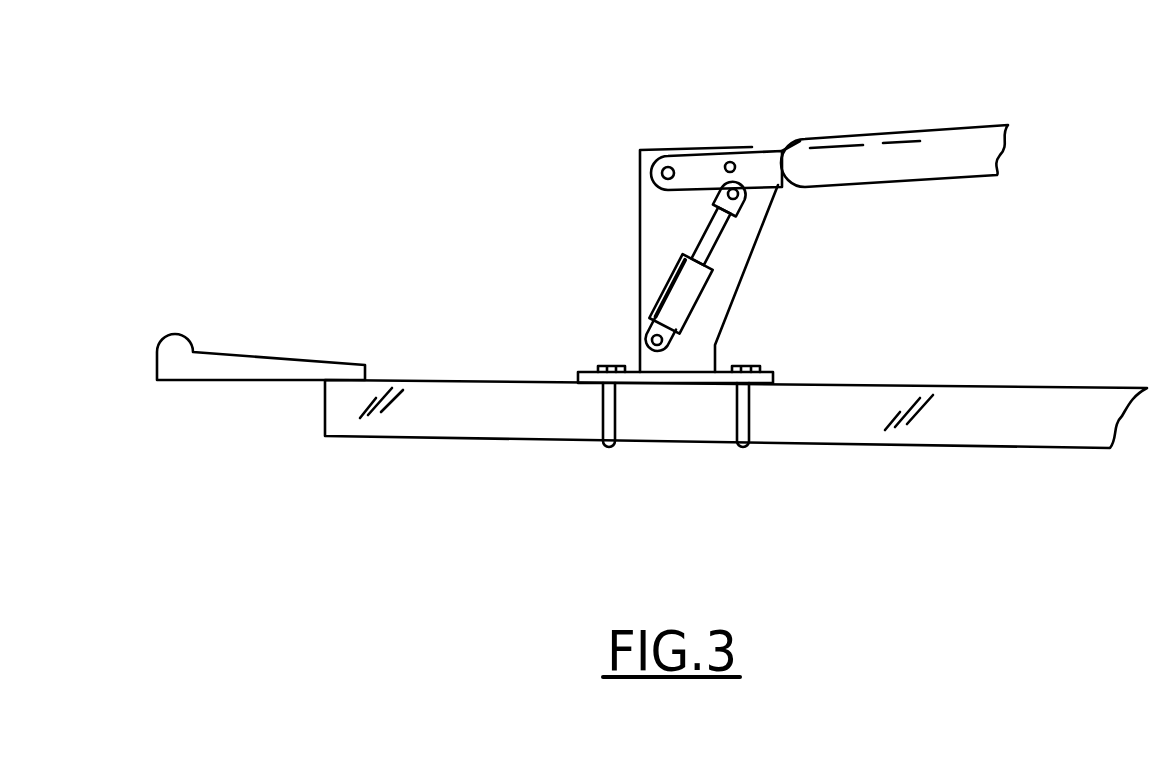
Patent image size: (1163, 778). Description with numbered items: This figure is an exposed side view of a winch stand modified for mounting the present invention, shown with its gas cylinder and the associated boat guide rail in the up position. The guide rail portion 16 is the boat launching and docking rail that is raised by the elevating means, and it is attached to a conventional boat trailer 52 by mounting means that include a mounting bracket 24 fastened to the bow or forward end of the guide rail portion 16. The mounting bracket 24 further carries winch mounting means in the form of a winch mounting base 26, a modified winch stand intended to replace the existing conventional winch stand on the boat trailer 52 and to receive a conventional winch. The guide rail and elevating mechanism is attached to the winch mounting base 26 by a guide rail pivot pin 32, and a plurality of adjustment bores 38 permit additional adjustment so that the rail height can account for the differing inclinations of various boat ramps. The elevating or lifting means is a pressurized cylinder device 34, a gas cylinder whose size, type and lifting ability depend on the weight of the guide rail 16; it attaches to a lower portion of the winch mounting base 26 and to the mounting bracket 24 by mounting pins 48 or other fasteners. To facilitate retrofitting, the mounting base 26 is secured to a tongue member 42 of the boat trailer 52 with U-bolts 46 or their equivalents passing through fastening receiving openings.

The guide rail portion 16 is at (945, 128).
The mounting bracket 24 is at (775, 152).
The winch mounting base 26 is at (753, 253).
The guide rail pivot pin 32 is at (653, 166).
The pressurized cylinder device 34 is at (700, 300).
The adjustment bores 38 is at (733, 158).
The tongue member 42 is at (325, 425).
The U-bolts 46 is at (612, 448).
The mounting pins 48 is at (722, 194).
The boat trailer 52 is at (1052, 450).